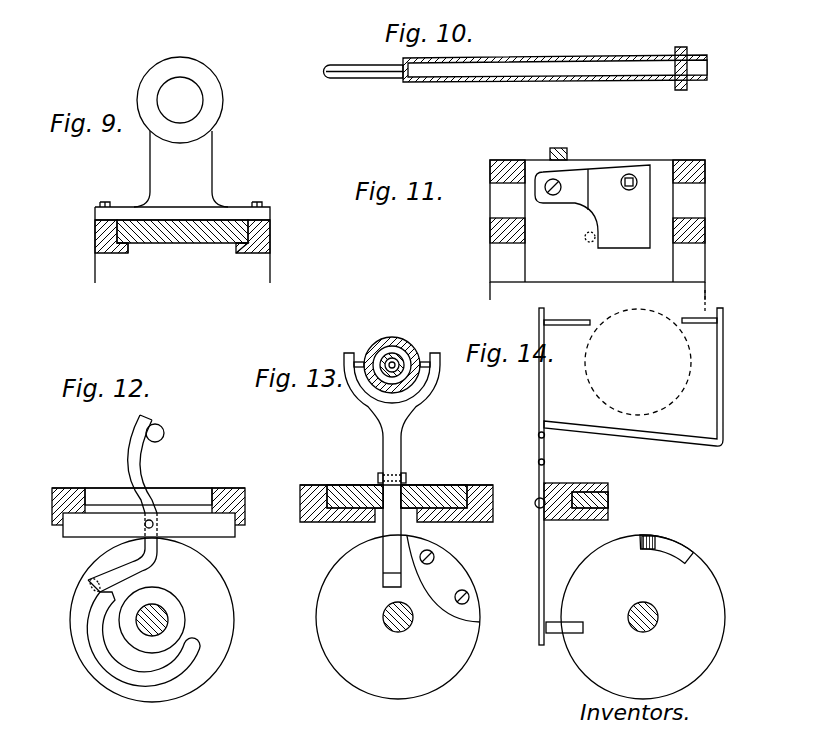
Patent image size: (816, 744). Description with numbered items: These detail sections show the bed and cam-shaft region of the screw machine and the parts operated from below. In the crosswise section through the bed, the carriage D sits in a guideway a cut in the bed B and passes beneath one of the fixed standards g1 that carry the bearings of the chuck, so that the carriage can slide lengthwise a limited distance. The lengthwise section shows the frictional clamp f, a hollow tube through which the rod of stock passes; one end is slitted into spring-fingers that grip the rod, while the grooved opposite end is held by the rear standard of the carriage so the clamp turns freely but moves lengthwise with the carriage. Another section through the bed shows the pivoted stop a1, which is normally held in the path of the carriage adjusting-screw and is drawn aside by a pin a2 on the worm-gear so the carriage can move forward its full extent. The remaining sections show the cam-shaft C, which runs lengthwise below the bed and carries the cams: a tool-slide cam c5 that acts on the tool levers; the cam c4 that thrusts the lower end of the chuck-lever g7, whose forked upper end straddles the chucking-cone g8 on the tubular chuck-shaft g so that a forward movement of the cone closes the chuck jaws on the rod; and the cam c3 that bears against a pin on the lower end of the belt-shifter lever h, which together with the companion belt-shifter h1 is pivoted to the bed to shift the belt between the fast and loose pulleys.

In FIG. 9, the fixed standard g1 is at (205, 158).
In FIG. 9, the carriage D is at (197, 236).
In FIG. 13, the carriage D is at (334, 491).
In FIG. 14, the carriage D is at (602, 486).
In FIG. 9, the guideway a is at (239, 246).
In FIG. 10, the frictional clamp f is at (524, 58).
In FIG. 13, the frictional clamp f is at (414, 347).
In FIG. 11, the pivoted stop a1 is at (609, 171).
In FIG. 11, the pin a2 is at (576, 140).
In FIG. 12, the bed B is at (246, 497).
In FIG. 13, the bed B is at (300, 487).
In FIG. 14, the bed B is at (558, 490).
In FIG. 12, the cam-shaft C is at (168, 614).
In FIG. 13, the cam-shaft C is at (406, 622).
In FIG. 14, the cam-shaft C is at (658, 617).
In FIG. 12, the tool-slide cam c5 is at (228, 632).
In FIG. 13, the chuck-shaft g is at (379, 344).
In FIG. 13, the chucking-cone g8 is at (405, 336).
In FIG. 13, the chuck-lever g7 is at (398, 453).
In FIG. 13, the cam c4 is at (460, 662).
In FIG. 14, the belt-shifter lever h is at (553, 476).
In FIG. 14, the belt-shifter h1 is at (646, 368).
In FIG. 14, the cam c3 is at (657, 617).